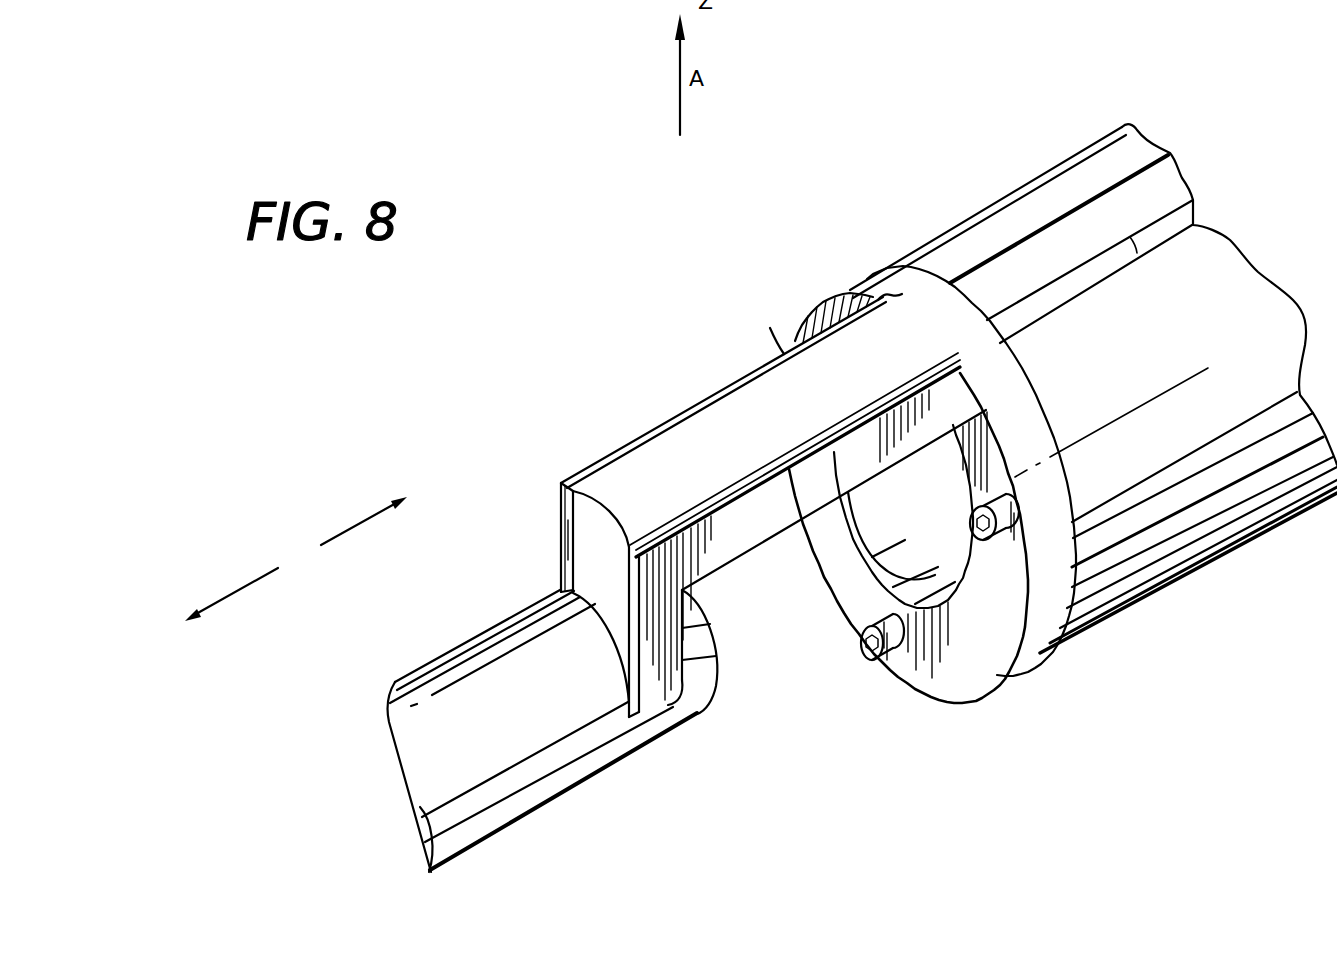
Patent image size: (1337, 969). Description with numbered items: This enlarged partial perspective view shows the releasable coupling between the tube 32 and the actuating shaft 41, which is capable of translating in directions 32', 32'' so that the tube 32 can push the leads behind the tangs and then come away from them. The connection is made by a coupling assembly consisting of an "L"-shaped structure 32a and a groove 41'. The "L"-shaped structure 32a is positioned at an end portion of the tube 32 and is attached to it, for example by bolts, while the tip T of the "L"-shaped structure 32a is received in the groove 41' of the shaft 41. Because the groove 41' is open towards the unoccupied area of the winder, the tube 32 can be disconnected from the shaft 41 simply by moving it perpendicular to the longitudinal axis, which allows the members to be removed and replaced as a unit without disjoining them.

The tube 32 is at (1053, 383).
The "L"-shaped structure 32a is at (785, 355).
The direction of translation 32' is at (369, 527).
The direction of translation 32'' is at (234, 607).
The actuating shaft 41 is at (552, 731).
The groove 41' is at (698, 674).
The tip T is at (572, 558).